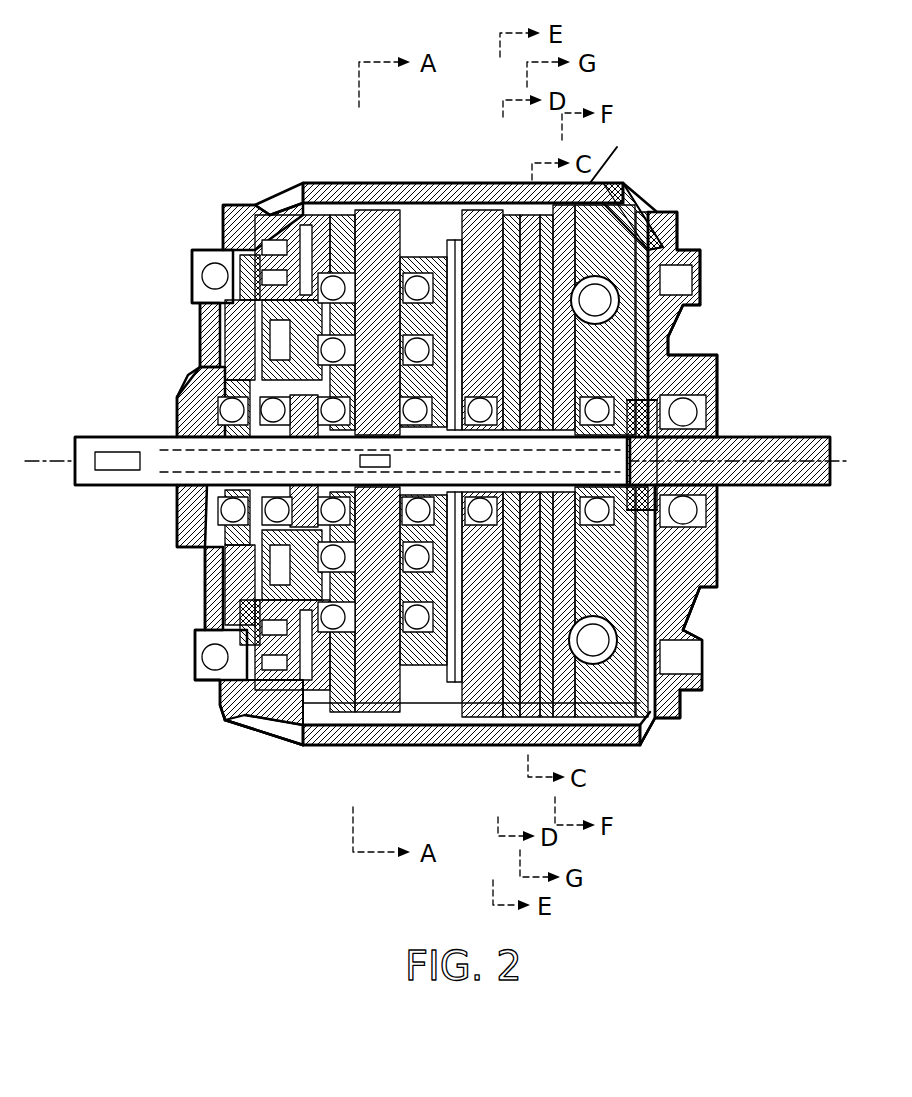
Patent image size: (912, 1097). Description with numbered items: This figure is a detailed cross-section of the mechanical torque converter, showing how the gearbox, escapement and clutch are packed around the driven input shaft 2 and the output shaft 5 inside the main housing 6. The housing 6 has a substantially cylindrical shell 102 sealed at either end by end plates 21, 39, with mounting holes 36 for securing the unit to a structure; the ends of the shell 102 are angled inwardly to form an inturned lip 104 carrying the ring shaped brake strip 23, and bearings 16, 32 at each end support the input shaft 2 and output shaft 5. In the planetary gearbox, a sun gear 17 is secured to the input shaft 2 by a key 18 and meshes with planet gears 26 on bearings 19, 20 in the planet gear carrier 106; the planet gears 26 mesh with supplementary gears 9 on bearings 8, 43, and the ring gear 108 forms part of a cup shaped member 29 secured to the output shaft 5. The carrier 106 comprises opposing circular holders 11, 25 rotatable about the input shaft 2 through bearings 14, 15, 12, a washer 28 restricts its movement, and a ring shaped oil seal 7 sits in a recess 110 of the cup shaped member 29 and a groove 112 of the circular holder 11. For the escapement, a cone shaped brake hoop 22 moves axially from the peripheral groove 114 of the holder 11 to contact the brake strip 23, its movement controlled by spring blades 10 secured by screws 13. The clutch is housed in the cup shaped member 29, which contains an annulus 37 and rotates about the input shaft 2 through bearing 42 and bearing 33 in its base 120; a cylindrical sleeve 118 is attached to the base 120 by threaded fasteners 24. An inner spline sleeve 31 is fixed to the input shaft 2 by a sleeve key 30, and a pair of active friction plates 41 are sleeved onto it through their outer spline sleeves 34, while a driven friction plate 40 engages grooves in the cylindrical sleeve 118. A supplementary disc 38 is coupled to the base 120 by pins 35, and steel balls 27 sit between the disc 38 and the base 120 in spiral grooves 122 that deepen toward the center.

The input shaft 2 is at (153, 487).
The output shaft 5 is at (725, 497).
The main housing 6 is at (503, 200).
The ring shaped oil seal 7 is at (245, 207).
The bearing 8 is at (238, 232).
The supplementary gears 9 is at (225, 245).
The spring blades 10 is at (238, 262).
The circular holder 11 is at (260, 300).
The bearing 12 is at (257, 322).
The screws 13 is at (222, 345).
The bearing 14 is at (222, 380).
The bearing 15 is at (177, 397).
The bearing 16 is at (180, 487).
The sun gear 17 is at (222, 550).
The key 18 is at (253, 600).
The bearing 19 is at (222, 620).
The bearing 20 is at (195, 653).
The end plate 21 is at (196, 686).
The cone shaped brake hoop 22 is at (220, 690).
The ring shaped brake strip 23 is at (227, 722).
The threaded fasteners 24 is at (650, 735).
The circular holder 25 is at (685, 728).
The planet gears 26 is at (690, 698).
The steel balls 27 is at (704, 663).
The washer 28 is at (705, 634).
The cup shaped member 29 is at (708, 600).
The sleeve key 30 is at (718, 566).
The inner spline sleeve 31 is at (720, 532).
The bearing 32 is at (720, 402).
The bearing 33 is at (705, 360).
The outer spline sleeve 34 is at (690, 343).
The pins 35 is at (690, 315).
The mounting holes 36 is at (205, 268).
The annulus 37 is at (702, 262).
The supplementary disc 38 is at (700, 237).
The end plate 39 is at (692, 214).
The driven friction plate 40 is at (660, 207).
The active friction plates 41 is at (590, 183).
The bearing 42 is at (408, 183).
The bearing 43 is at (290, 192).
The cylindrical shell 102 is at (418, 183).
The inturned lip 104 is at (240, 205).
The planet gear carrier 106 is at (455, 183).
The ring gear 108 is at (358, 745).
The recess 110 is at (310, 745).
The groove 112 is at (282, 742).
The peripheral groove 114 is at (275, 205).
The cylindrical sleeve 118 is at (436, 200).
The base 120 is at (648, 735).
The spiral grooves 122 is at (638, 208).